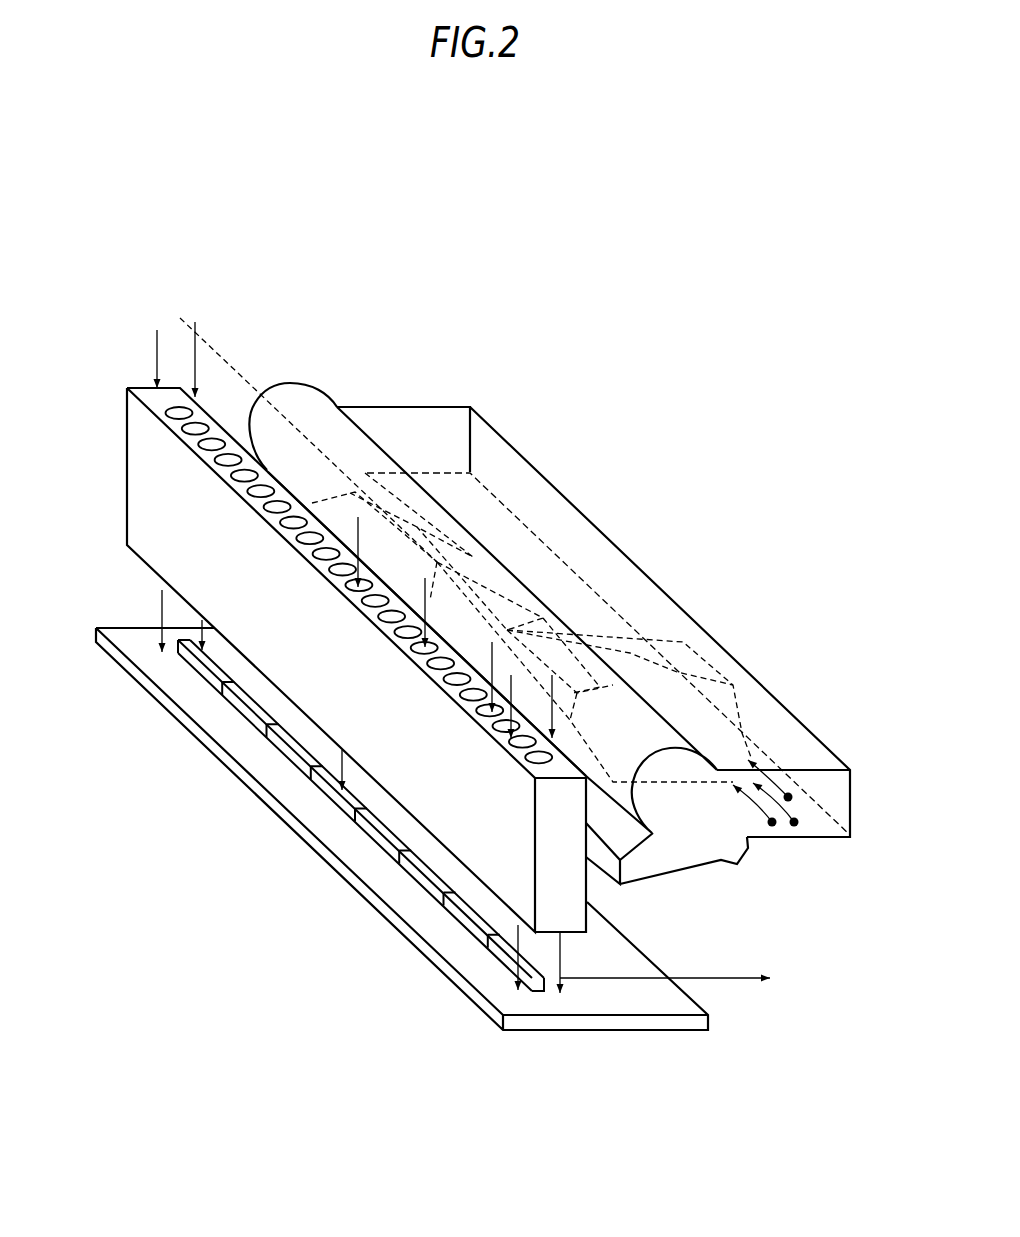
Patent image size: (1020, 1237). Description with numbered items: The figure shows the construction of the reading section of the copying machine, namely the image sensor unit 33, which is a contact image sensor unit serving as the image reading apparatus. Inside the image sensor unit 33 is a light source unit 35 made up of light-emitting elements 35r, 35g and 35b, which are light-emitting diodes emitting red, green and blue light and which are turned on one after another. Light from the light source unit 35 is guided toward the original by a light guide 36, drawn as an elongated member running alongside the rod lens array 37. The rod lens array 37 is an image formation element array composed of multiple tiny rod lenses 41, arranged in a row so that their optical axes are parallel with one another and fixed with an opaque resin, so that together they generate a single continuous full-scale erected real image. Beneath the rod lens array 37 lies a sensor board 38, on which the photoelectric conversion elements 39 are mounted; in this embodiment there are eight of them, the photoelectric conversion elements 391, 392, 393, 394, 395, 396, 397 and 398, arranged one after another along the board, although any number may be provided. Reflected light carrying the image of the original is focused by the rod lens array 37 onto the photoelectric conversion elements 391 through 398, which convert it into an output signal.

The image sensor unit 33 is at (806, 465).
The light source unit 35 is at (806, 859).
The light-emitting element 35b is at (772, 827).
The light-emitting element 35g is at (794, 827).
The light-emitting element 35r is at (791, 802).
The light guide 36 is at (622, 552).
The rod lens array 37 is at (127, 450).
The sensor board 38 is at (603, 1020).
The photoelectric conversion elements 39 is at (323, 843).
The photoelectric conversion element 391 is at (200, 667).
The photoelectric conversion element 392 is at (245, 709).
The photoelectric conversion element 393 is at (290, 751).
The photoelectric conversion element 394 is at (335, 793).
The photoelectric conversion element 395 is at (380, 835).
The photoelectric conversion element 396 is at (425, 877).
The photoelectric conversion element 397 is at (470, 919).
The photoelectric conversion element 398 is at (515, 961).
The rod lenses 41 is at (172, 410).